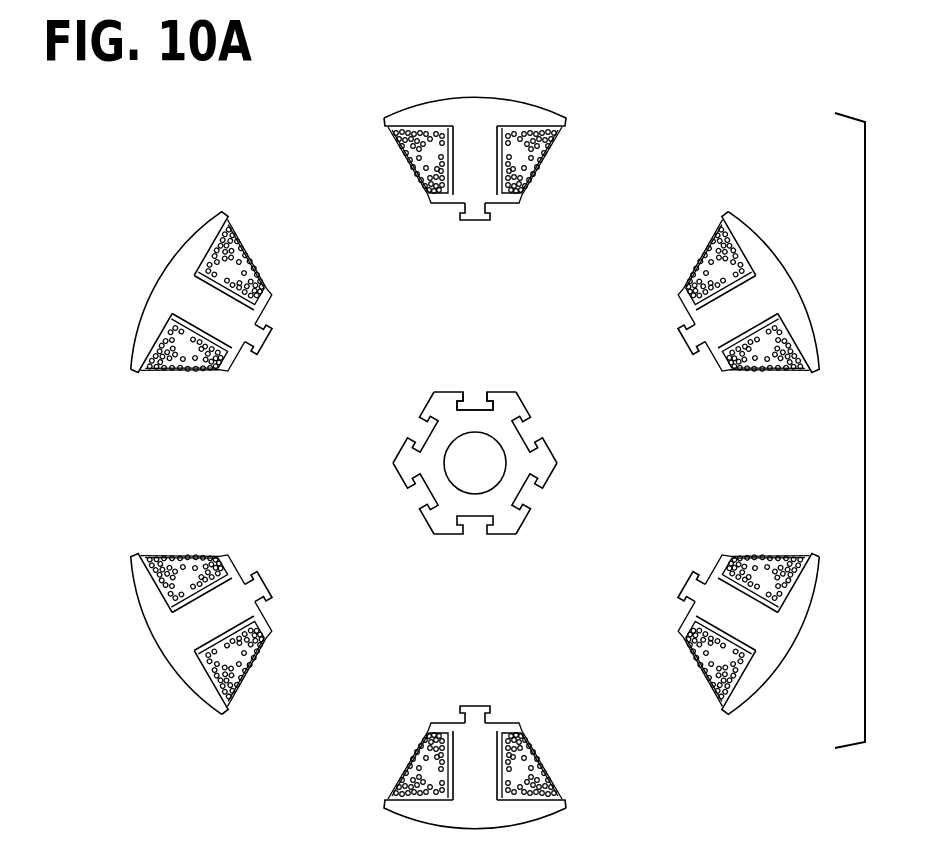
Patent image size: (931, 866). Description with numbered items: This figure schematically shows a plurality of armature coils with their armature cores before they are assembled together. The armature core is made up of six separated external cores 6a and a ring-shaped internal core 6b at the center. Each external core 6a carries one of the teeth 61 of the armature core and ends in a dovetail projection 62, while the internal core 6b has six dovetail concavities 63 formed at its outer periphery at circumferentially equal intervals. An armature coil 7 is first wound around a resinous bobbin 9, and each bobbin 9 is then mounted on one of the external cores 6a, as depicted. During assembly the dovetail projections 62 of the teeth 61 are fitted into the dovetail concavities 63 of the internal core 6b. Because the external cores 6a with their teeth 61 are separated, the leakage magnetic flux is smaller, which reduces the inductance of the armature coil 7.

The external core 6a is at (513, 437).
The internal core 6b is at (475, 107).
The armature coil 7 is at (413, 160).
The bobbin 9 is at (387, 120).
The tooth 61 is at (483, 153).
The dovetail projection 62 is at (472, 217).
The dovetail concavity 63 is at (472, 400).